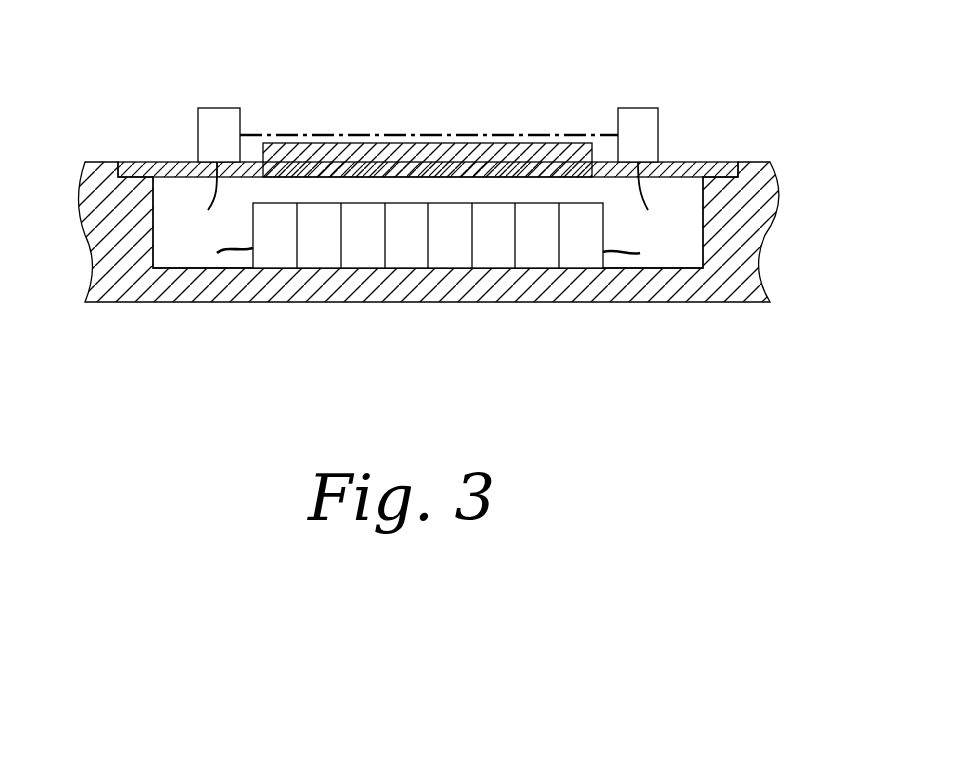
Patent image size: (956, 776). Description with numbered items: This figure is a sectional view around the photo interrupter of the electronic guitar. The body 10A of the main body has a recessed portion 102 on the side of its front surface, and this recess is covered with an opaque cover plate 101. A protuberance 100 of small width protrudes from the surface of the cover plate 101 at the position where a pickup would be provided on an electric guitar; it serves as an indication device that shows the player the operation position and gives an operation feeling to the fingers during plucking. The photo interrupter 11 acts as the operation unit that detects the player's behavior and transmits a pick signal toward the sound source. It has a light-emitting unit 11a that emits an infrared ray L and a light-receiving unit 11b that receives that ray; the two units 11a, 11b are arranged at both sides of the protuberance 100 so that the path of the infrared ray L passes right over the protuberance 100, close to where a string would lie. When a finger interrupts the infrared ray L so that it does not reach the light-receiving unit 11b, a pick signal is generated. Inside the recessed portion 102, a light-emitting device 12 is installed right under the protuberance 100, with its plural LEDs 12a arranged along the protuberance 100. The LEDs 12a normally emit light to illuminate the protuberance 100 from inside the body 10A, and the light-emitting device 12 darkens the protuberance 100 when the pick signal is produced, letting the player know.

The body 10A is at (770, 162).
The cover plate 101 is at (148, 160).
The recessed portion 102 is at (152, 245).
The protuberance 100 is at (395, 143).
The photo interrupter 11 is at (469, 117).
The light-emitting unit 11a is at (637, 108).
The light-receiving unit 11b is at (217, 108).
The infrared ray L is at (505, 130).
The light-emitting device 12 is at (438, 286).
The LEDs 12a is at (488, 250).